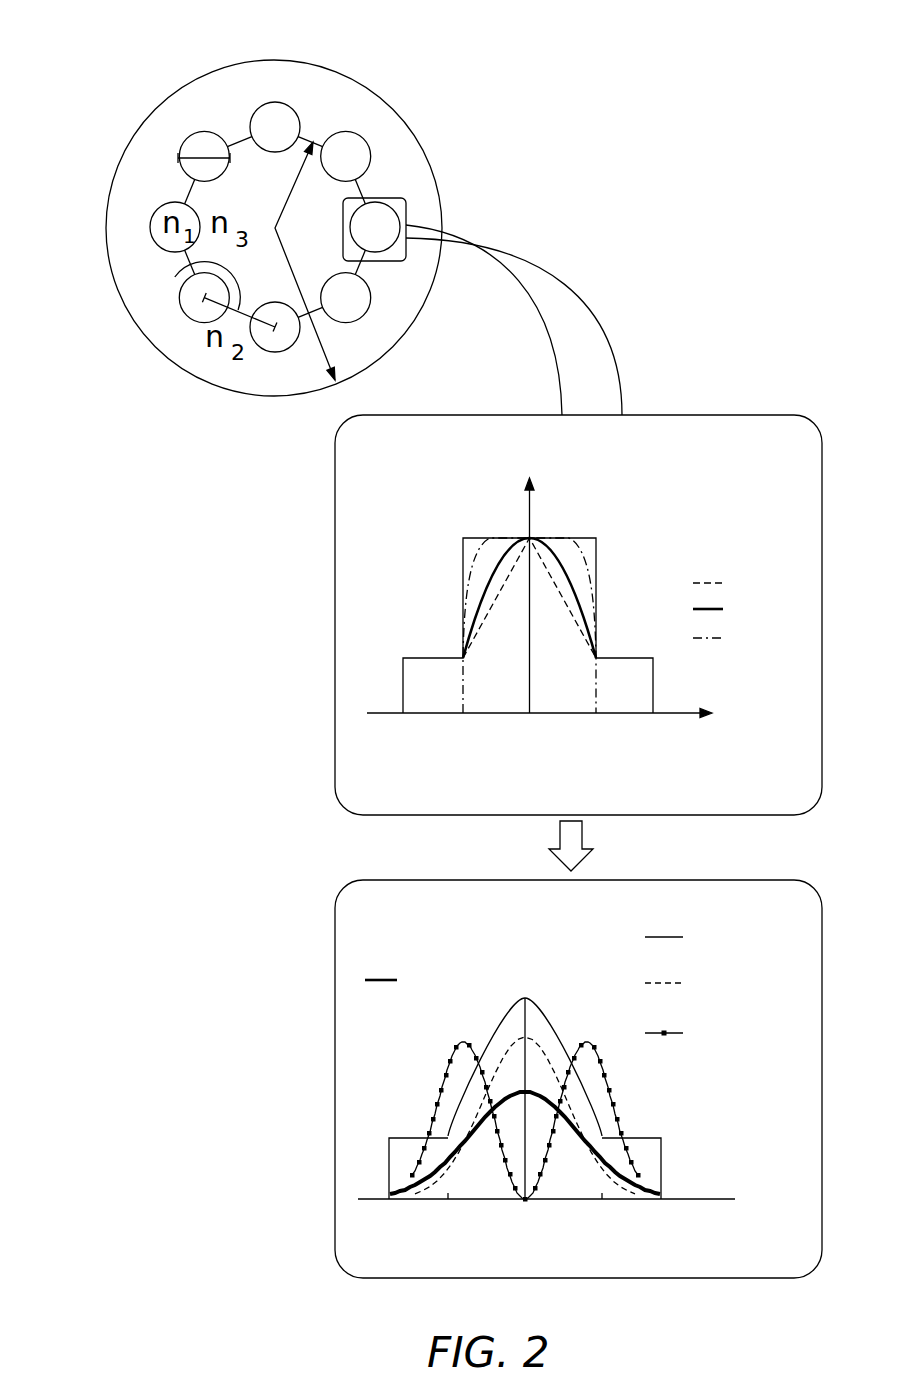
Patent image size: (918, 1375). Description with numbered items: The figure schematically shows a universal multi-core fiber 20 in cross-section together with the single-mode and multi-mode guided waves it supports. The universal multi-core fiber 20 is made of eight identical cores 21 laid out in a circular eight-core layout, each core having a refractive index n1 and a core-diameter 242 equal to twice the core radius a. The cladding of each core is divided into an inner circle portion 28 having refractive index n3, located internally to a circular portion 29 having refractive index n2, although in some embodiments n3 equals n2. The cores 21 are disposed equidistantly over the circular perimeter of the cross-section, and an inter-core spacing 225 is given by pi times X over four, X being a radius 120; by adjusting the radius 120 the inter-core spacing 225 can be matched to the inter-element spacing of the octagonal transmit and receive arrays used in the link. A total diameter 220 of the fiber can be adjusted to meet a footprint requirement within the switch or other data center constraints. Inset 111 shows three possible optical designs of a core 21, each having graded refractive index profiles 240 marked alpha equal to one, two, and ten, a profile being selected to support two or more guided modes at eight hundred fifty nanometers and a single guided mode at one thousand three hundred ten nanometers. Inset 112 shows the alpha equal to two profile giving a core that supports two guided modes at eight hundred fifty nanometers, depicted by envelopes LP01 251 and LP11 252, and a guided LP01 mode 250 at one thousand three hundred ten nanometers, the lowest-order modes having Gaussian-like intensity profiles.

The universal multi-core fiber 20 is at (440, 100).
The cores 21 is at (257, 104).
The inner circle portion 28 is at (327, 241).
The circular portion 29 is at (290, 389).
The radius 120 is at (275, 227).
The total diameter 220 is at (325, 346).
The inter-core spacing 225 is at (174, 277).
The core-diameter 242 is at (191, 171).
The inset 111 is at (407, 460).
The inset 112 is at (410, 936).
The graded refractive index profiles 240 is at (476, 572).
The LP01 mode 250 is at (618, 1168).
The LP01 envelope 251 is at (518, 1040).
The LP11 envelope 252 is at (447, 1065).